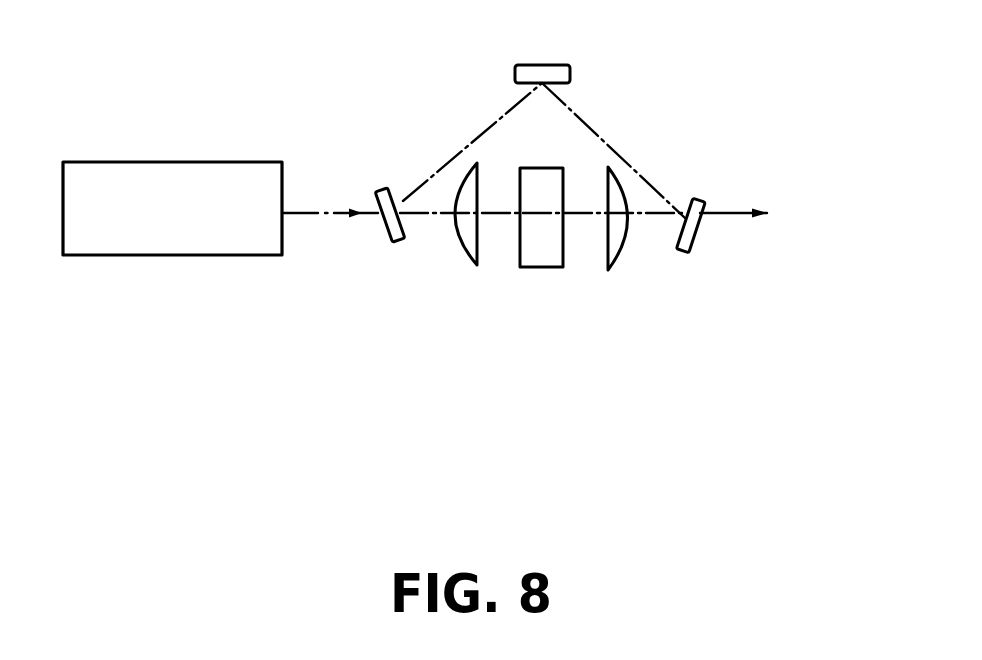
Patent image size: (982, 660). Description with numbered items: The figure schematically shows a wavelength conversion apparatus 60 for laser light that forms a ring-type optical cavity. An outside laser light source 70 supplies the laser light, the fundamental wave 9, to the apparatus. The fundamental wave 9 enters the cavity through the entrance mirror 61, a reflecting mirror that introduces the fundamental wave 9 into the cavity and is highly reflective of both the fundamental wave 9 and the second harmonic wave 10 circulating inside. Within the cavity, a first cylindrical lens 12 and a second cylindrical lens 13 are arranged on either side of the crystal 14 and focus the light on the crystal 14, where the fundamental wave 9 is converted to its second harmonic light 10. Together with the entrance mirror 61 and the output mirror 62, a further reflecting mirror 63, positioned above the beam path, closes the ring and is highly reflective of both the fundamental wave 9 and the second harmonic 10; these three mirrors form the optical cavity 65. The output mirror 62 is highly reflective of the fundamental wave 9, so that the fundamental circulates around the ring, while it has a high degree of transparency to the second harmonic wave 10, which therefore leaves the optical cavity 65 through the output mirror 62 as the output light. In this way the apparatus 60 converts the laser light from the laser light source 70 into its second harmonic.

The laser light source 70 is at (131, 164).
The fundamental wave 9 is at (308, 205).
The entrance mirror 61 is at (388, 230).
The cylindrical lens 12 is at (468, 258).
The crystal 14 is at (545, 264).
The cylindrical lens 13 is at (622, 257).
The reflecting mirror 63 is at (553, 65).
The output mirror 62 is at (692, 242).
The second harmonic light 10 is at (727, 214).
The optical cavity 65 is at (352, 365).
The apparatus for wavelength conversion of laser light 60 is at (449, 527).